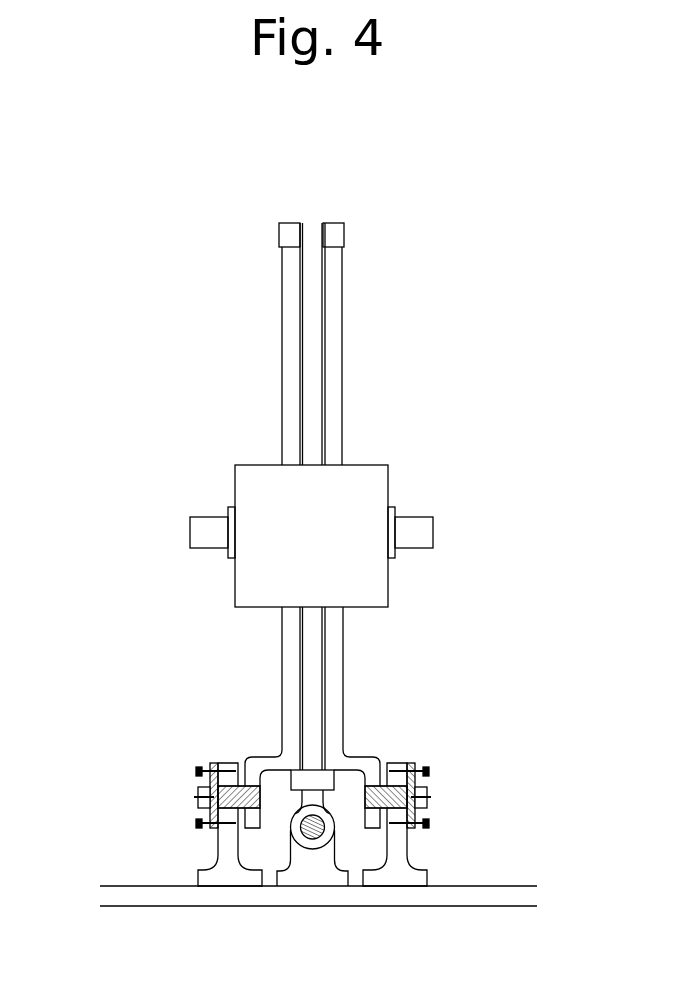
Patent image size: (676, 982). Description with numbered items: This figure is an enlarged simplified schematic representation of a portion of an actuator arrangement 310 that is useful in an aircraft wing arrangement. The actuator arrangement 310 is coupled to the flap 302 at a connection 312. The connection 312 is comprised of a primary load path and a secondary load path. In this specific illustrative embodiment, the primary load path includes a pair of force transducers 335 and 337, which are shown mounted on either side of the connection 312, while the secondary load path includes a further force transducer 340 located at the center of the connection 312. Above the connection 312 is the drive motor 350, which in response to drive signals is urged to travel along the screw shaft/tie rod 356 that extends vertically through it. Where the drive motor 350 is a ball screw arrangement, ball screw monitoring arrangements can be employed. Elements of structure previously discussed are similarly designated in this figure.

The flap 302 is at (153, 896).
The actuator arrangement 310 is at (542, 955).
The connection 312 is at (489, 849).
The force transducer 335 is at (198, 798).
The force transducer 337 is at (433, 797).
The force transducer 340 is at (300, 828).
The drive motor 350 is at (378, 567).
The screw shaft/tie rod 356 is at (298, 300).